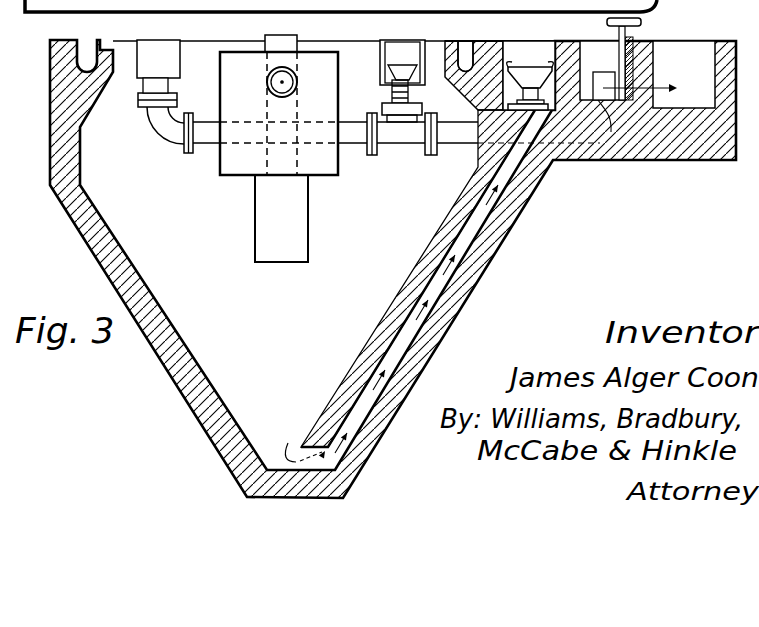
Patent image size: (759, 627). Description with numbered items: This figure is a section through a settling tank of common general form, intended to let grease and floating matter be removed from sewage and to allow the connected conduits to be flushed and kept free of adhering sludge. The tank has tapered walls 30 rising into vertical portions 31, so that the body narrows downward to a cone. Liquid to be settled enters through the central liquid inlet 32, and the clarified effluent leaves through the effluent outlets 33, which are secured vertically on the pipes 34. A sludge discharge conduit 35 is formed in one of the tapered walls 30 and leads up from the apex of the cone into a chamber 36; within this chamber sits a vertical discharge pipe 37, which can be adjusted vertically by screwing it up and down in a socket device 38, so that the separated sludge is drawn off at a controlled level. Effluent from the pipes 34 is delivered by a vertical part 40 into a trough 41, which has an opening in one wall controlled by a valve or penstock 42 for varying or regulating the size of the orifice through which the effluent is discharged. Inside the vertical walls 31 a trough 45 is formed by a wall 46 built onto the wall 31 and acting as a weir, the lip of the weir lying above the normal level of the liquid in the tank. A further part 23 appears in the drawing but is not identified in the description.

The shaft bearing of pump 23 is at (268, 84).
The tapered wall parts 30 is at (360, 360).
The vertical wall portions 31 is at (505, 48).
The central liquid inlet 32 is at (323, 193).
The effluent outlets 33 is at (400, 72).
The pipes 34 is at (177, 143).
The sludge discharge conduit 35 is at (440, 283).
The chamber 36 is at (500, 97).
The vertical discharge pipe 37 is at (547, 70).
The socket device 38 is at (603, 62).
The vertical part 40 is at (578, 100).
The trough 41 is at (642, 22).
The valve or penstock 42 is at (632, 38).
The trough 45 is at (88, 58).
The wall 46 is at (469, 50).